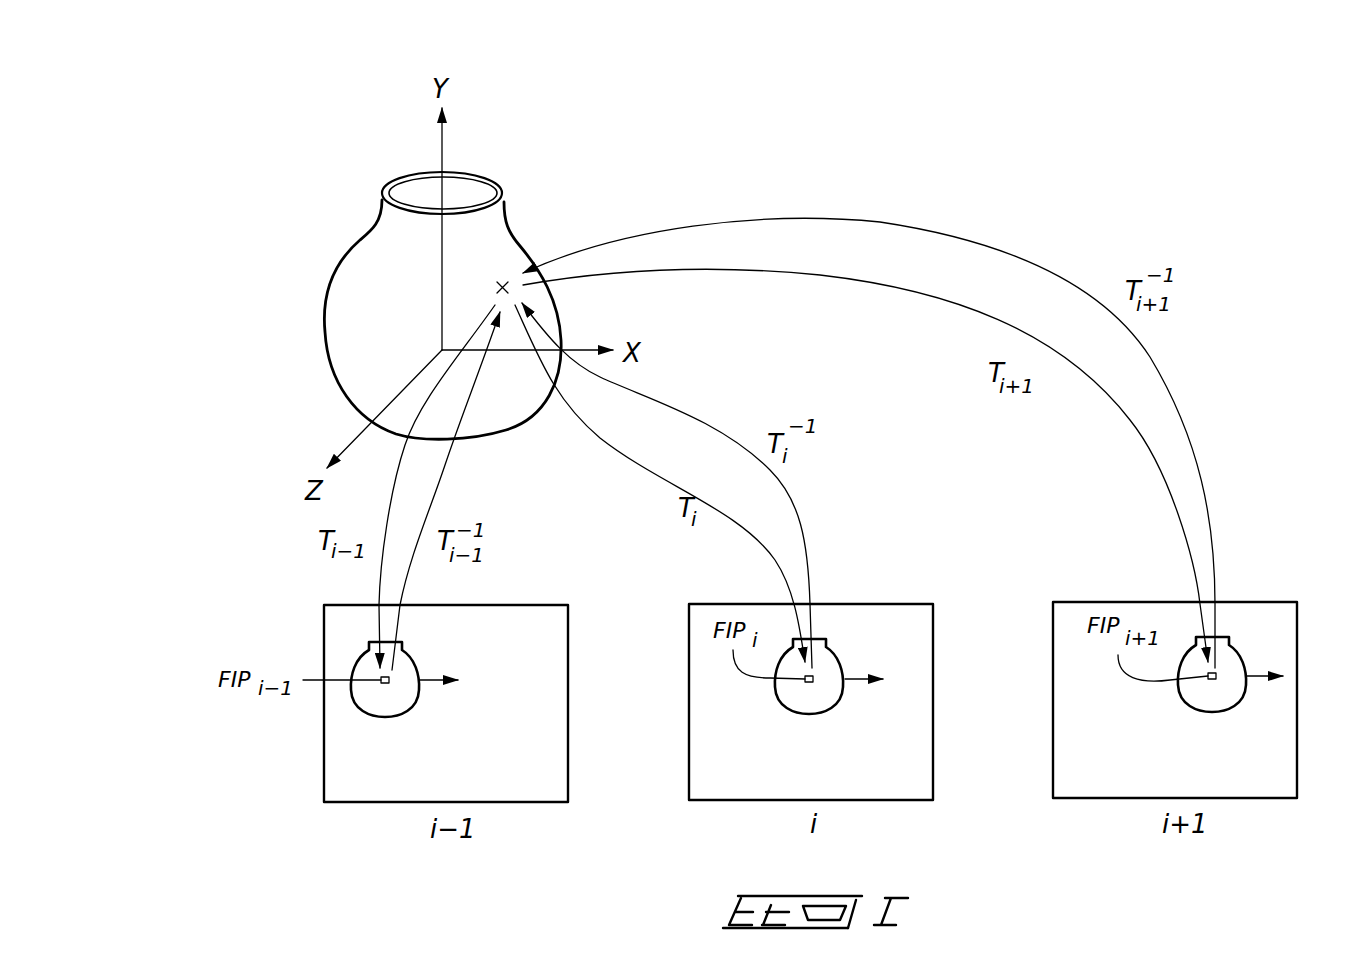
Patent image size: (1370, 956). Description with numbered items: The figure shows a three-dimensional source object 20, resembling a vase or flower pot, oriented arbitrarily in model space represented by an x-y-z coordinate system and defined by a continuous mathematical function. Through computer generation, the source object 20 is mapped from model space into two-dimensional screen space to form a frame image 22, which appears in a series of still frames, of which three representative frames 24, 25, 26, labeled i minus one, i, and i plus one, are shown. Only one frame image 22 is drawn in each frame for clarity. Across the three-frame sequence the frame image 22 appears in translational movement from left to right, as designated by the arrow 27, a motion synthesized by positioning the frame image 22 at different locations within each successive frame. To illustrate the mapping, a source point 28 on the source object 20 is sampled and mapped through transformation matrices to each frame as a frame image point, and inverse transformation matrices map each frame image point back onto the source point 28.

The source object 20 is at (368, 237).
The source point 28 is at (502, 277).
The frame image 22 is at (401, 717).
The frame 24 is at (324, 760).
The frame 25 is at (689, 755).
The frame 26 is at (1053, 708).
The arrow 27 is at (430, 680).